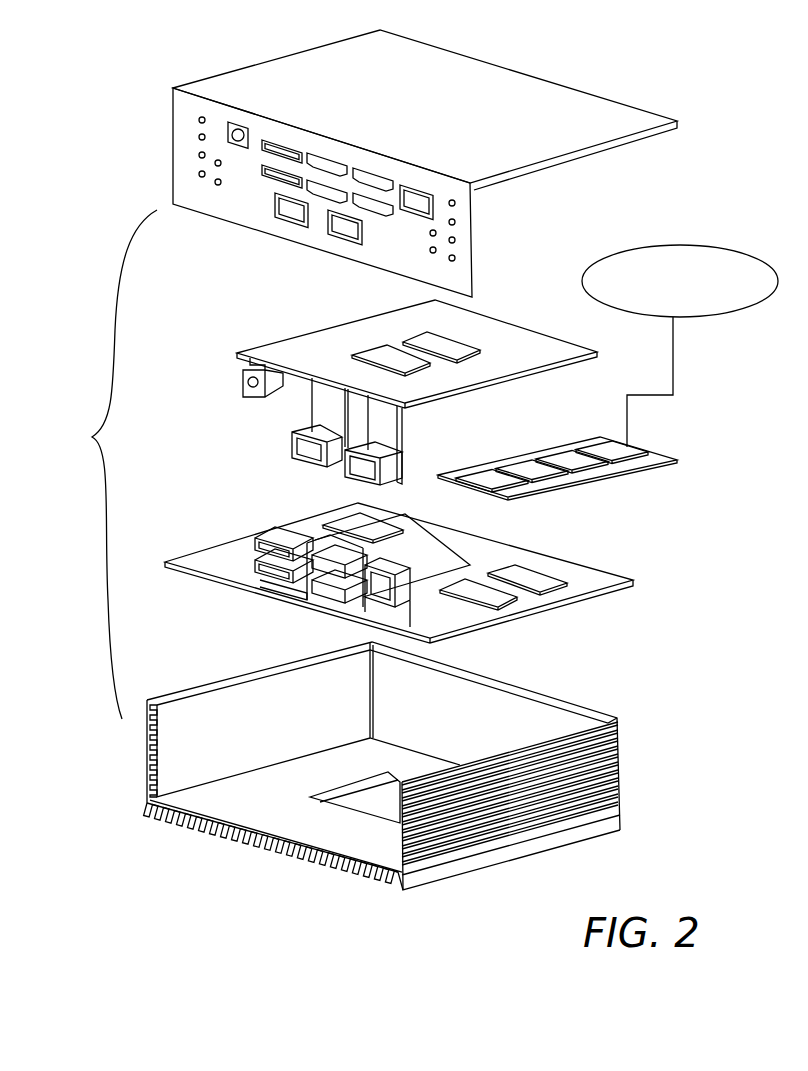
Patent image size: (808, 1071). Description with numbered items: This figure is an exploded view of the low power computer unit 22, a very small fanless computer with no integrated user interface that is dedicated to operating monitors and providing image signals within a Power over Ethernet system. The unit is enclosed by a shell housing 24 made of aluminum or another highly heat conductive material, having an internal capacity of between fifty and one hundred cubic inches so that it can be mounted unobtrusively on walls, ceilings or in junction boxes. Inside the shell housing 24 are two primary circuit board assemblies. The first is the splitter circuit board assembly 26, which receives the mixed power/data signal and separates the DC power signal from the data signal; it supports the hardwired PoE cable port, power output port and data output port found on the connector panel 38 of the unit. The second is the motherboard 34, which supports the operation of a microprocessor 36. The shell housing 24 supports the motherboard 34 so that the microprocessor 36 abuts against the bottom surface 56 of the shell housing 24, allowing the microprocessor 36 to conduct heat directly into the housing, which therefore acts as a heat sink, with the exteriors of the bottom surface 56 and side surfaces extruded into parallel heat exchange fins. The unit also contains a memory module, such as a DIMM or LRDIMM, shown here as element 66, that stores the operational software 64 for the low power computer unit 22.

The low power computer unit 22 is at (103, 464).
The shell housing 24 is at (571, 703).
The splitter circuit board assembly 26 is at (513, 333).
The motherboard 34 is at (597, 568).
The microprocessor 36 is at (433, 563).
The connector panel 38 is at (222, 200).
The bottom surface 56 is at (248, 812).
The operational software 64 is at (610, 257).
The memory module 66 is at (557, 448).